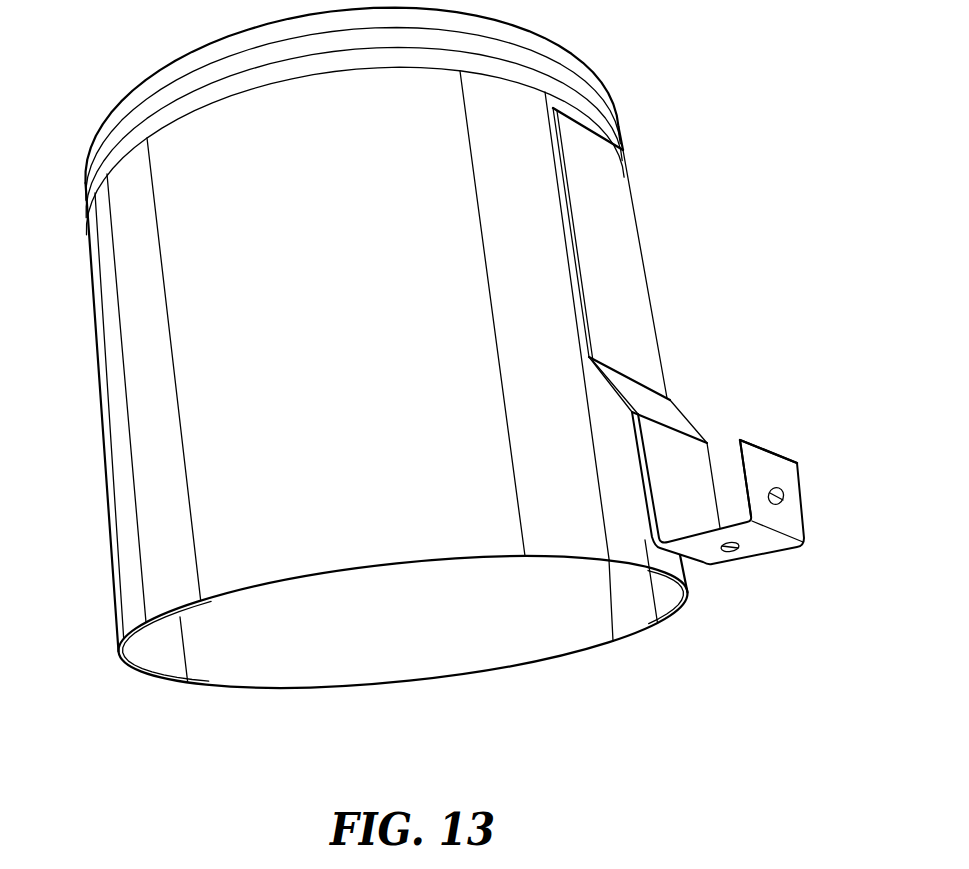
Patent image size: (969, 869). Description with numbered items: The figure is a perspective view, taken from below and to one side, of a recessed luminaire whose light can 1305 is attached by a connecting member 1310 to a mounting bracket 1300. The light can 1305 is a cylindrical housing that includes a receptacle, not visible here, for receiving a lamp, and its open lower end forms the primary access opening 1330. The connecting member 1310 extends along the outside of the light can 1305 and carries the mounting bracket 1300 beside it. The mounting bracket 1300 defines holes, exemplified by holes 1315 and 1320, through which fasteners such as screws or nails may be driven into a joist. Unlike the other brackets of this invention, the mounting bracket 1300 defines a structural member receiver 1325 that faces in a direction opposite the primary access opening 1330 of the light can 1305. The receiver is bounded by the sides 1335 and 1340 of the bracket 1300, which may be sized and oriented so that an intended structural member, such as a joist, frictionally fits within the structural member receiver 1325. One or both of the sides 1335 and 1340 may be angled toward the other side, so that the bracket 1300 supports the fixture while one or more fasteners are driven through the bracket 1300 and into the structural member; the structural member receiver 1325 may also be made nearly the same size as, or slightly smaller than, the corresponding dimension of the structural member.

The mounting bracket 1300 is at (737, 385).
The light can 1305 is at (123, 560).
The connecting member 1310 is at (673, 400).
The hole 1315 is at (827, 538).
The hole 1320 is at (731, 553).
The structural member receiver 1325 is at (727, 460).
The primary access opening 1330 is at (232, 652).
The side 1335 is at (678, 465).
The side 1340 is at (795, 525).